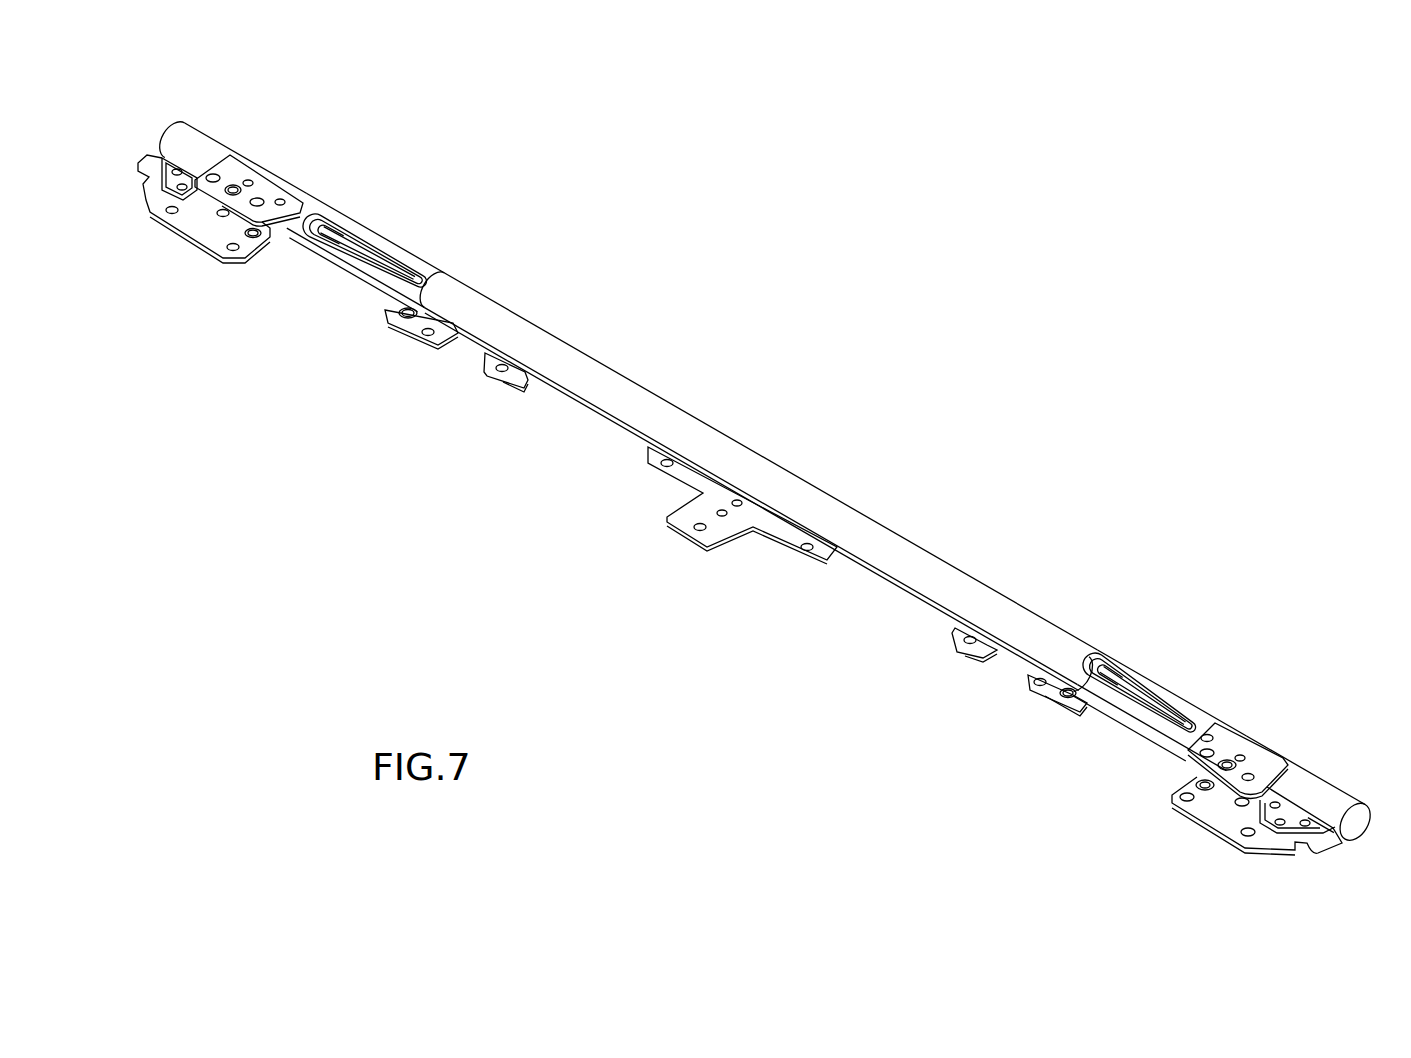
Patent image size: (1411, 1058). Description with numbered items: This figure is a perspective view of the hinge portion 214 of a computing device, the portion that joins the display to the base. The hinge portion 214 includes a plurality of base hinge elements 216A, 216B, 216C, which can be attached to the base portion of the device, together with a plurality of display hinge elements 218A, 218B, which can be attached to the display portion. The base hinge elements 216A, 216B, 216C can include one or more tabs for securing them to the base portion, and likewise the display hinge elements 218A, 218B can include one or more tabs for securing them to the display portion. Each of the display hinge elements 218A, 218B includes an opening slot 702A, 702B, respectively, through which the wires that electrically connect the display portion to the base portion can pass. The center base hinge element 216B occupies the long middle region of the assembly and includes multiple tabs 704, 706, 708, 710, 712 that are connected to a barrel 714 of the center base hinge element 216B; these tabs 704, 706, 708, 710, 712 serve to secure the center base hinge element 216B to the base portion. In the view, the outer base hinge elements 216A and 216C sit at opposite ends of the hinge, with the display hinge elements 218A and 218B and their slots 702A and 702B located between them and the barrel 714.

The hinge portion 214 is at (873, 329).
The base hinge element 216A is at (207, 128).
The center base hinge element 216B is at (873, 515).
The base hinge element 216C is at (1323, 773).
The display hinge element 218A is at (390, 233).
The display hinge element 218B is at (1237, 720).
The opening slot 702A is at (370, 267).
The opening slot 702B is at (1147, 688).
The tab 704 is at (433, 347).
The tab 706 is at (508, 386).
The tab 708 is at (700, 540).
The tab 710 is at (967, 652).
The tab 712 is at (1040, 697).
The barrel 714 is at (597, 365).